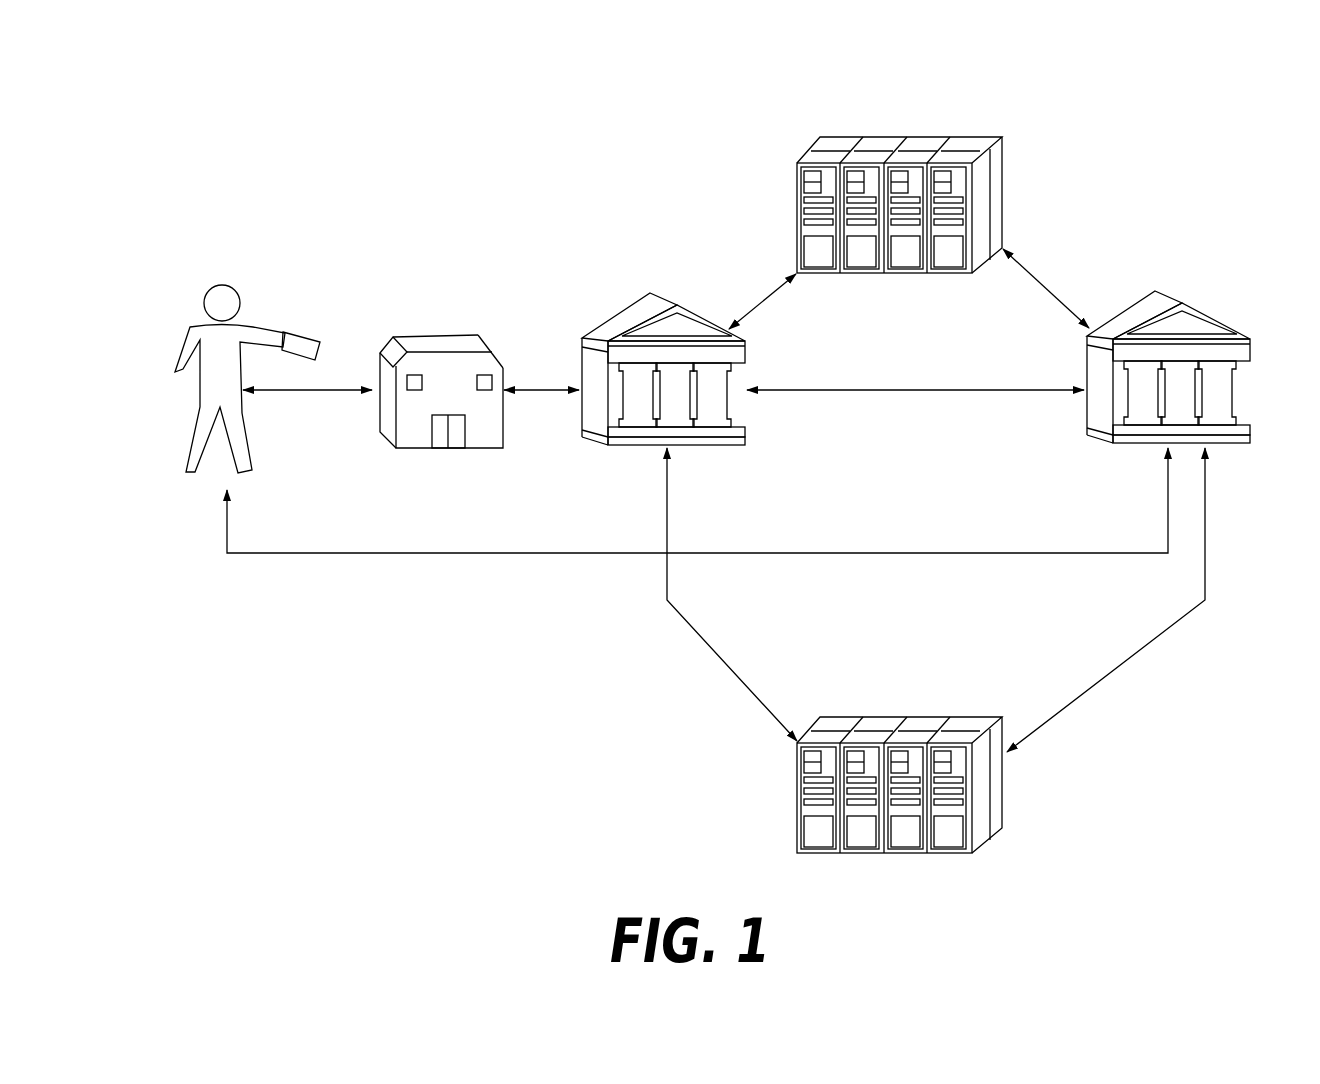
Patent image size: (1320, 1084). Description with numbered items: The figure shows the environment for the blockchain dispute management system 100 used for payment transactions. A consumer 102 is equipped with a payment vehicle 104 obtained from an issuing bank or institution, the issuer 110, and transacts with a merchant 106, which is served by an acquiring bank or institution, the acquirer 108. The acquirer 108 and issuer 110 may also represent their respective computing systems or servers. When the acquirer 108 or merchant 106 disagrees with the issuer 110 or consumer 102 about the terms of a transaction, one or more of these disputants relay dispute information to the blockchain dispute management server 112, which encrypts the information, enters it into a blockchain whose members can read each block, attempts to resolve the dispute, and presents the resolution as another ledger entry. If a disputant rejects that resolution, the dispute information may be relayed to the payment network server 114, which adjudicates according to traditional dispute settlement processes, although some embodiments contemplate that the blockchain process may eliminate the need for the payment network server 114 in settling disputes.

The environment for the blockchain dispute management system 100 is at (697, 84).
The consumer 102 is at (222, 285).
The payment vehicle 104 is at (303, 334).
The merchant 106 is at (438, 335).
The acquirer 108 is at (660, 296).
The issuer 110 is at (1168, 300).
The blockchain dispute management server 112 is at (931, 137).
The payment network server 114 is at (975, 717).